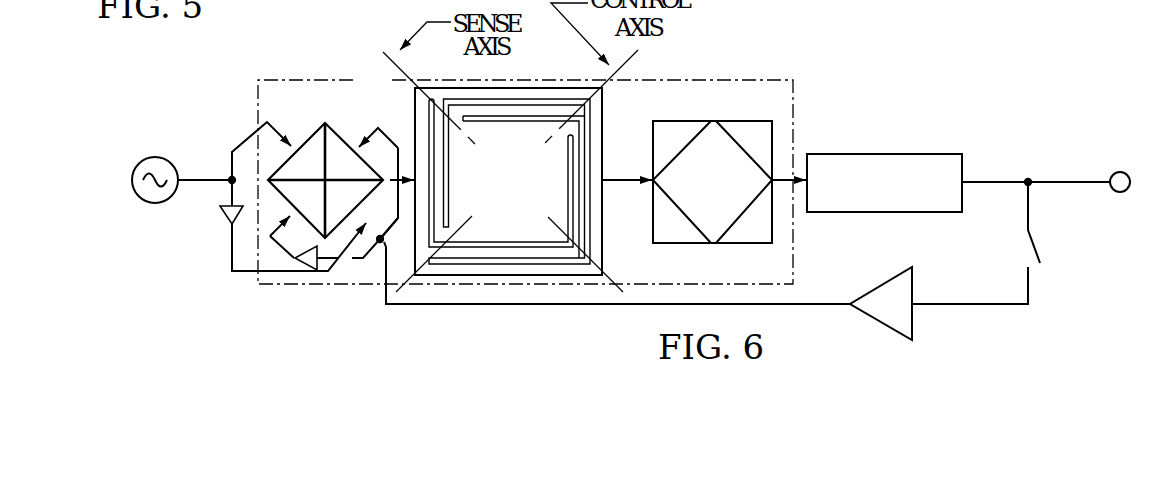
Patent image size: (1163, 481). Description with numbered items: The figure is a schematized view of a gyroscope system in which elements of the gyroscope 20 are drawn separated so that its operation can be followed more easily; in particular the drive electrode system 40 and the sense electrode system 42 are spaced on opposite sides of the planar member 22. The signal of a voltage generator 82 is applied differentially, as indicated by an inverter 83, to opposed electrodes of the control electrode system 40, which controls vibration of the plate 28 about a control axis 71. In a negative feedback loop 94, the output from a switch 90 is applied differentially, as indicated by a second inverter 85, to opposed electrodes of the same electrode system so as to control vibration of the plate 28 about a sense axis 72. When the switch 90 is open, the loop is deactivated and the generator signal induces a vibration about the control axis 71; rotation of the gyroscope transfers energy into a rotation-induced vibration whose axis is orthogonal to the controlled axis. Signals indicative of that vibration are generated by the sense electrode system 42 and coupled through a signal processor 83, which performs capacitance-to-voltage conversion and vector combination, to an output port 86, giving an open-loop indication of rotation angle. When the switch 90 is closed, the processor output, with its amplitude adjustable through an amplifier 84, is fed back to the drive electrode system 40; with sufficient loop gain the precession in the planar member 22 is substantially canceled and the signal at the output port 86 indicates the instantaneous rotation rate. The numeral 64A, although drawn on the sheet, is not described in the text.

In FIG. 6, the gyroscope 20 is at (766, 76).
In FIG. 6, the planar member 22 is at (608, 96).
In FIG. 6, the plate 28 is at (573, 138).
In FIG. 6, the drive electrode system 40 is at (327, 123).
In FIG. 6, the sense electrode system 42 is at (688, 121).
In FIG. 5, the sensor element 64A is at (329, 6).
In FIG. 6, the control axis 71 is at (413, 278).
In FIG. 6, the sense axis 72 is at (603, 279).
In FIG. 6, the voltage generator 82 is at (138, 203).
In FIG. 6, the inverter / signal processor 83 is at (221, 207).
In FIG. 6, the amplifier 84 is at (890, 277).
In FIG. 6, the inverter 85 is at (301, 262).
In FIG. 6, the output port 86 is at (1120, 172).
In FIG. 6, the switch 90 is at (1040, 243).
In FIG. 6, the negative feedback loop 94 is at (1032, 305).